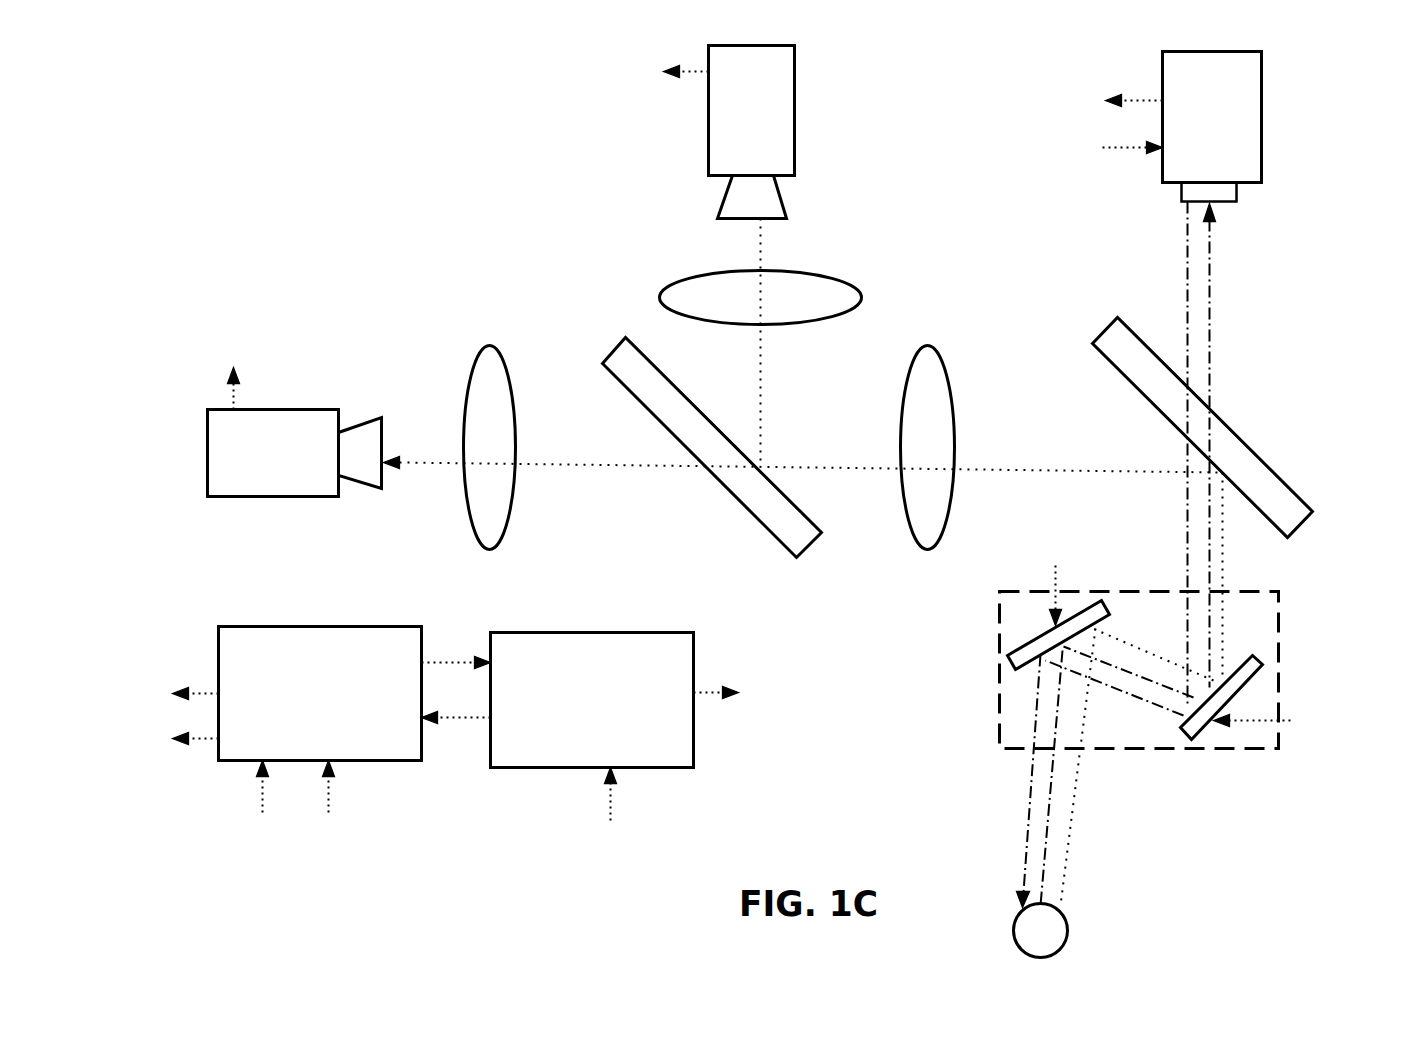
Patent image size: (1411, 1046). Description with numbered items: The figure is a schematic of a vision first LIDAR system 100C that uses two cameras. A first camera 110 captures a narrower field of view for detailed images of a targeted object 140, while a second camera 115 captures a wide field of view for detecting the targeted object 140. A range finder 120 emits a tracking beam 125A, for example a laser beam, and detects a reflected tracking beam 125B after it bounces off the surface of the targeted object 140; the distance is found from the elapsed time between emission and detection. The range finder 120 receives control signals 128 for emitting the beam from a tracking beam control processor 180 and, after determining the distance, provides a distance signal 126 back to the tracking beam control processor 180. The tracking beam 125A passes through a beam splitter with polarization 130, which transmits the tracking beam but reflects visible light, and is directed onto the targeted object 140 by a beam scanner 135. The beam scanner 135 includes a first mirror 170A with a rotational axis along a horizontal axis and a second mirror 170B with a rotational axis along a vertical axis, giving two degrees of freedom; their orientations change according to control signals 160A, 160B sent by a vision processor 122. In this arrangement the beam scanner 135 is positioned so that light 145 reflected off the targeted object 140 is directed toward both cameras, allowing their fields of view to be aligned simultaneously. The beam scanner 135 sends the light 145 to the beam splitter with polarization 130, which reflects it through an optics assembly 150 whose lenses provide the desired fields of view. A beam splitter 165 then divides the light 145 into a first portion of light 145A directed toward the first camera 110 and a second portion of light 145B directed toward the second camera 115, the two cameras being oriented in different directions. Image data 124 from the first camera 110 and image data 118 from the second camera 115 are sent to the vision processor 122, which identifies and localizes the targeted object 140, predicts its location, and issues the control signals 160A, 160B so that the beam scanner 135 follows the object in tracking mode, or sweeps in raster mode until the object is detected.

The vision first LIDAR system 100C is at (240, 112).
The first camera 110 is at (272, 409).
The second camera 115 is at (795, 88).
The image data 118 is at (477, 453).
The range finder 120 is at (1262, 108).
The vision processor 122 is at (301, 722).
The image data 124 is at (287, 592).
The tracking beam 125A is at (1186, 233).
The reflected tracking beam 125B is at (1210, 252).
The distance signal 126 is at (878, 469).
The control signals 128 is at (928, 420).
The beam splitter with polarization 130 is at (1295, 492).
The beam scanner 135 is at (1278, 600).
The targeted object 140 is at (1067, 930).
The light 145 is at (1095, 470).
The first portion of light 145A is at (545, 465).
The second portion of light 145B is at (760, 363).
The optics assembly 150 is at (861, 295).
The control signal 160A is at (729, 711).
The control signal 160B is at (599, 649).
The beam splitter 165 is at (742, 510).
The first mirror 170A is at (1262, 665).
The second mirror 170B is at (1035, 637).
The tracking beam control processor 180 is at (573, 744).